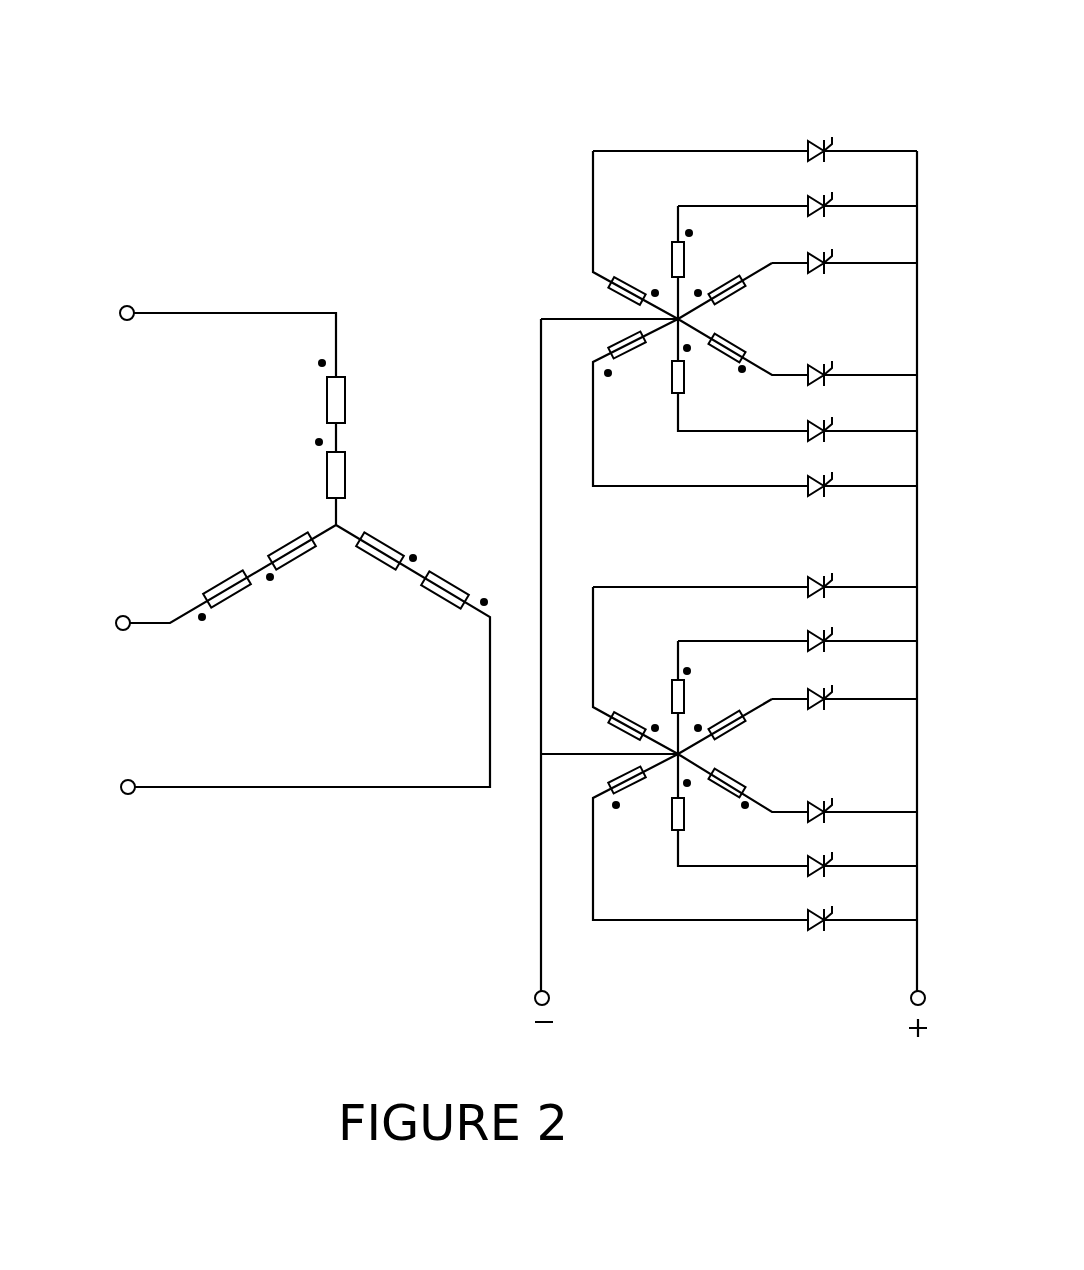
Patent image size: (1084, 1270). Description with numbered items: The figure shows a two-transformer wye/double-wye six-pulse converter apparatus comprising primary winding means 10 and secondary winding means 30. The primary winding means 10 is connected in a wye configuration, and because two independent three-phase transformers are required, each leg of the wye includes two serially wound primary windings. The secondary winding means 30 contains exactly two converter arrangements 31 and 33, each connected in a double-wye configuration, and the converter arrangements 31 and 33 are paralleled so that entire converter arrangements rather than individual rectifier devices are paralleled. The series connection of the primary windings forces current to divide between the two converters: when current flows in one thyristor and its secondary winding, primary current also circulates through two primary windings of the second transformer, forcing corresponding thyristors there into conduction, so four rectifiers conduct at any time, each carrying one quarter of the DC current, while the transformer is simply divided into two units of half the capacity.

The primary winding means 10 is at (274, 282).
The secondary winding means 30 is at (702, 108).
The converter arrangement 31 is at (887, 327).
The converter arrangement 33 is at (893, 765).